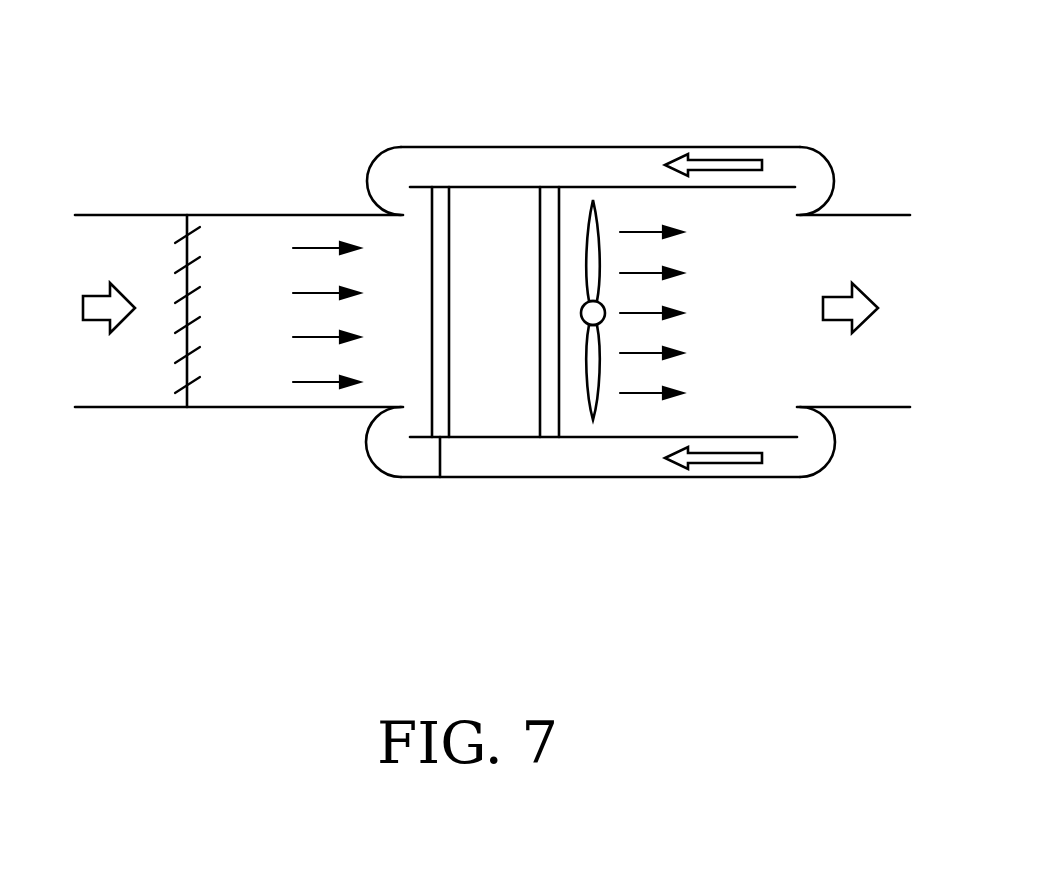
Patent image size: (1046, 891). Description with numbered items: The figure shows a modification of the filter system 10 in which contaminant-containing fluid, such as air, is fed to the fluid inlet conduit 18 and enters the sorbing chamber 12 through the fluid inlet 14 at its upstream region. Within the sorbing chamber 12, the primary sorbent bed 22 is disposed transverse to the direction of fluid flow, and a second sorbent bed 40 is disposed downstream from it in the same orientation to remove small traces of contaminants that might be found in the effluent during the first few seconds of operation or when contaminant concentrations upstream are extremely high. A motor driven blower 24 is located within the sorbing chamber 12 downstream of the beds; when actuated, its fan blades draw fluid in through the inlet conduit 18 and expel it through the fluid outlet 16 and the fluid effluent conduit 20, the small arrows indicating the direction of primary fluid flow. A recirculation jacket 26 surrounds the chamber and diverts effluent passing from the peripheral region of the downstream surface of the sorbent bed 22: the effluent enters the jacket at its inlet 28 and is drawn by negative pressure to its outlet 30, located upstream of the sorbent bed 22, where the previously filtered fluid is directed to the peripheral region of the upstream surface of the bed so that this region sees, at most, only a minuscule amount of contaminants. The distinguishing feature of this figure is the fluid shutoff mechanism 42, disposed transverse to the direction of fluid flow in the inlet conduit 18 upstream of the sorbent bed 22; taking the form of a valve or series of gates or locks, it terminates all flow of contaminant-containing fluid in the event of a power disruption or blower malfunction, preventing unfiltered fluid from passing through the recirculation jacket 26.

The filter system 10 is at (490, 112).
The sorbing chamber 12 is at (683, 248).
The fluid inlet 14 is at (415, 303).
The fluid outlet 16 is at (795, 287).
The fluid inlet conduit 18 is at (288, 407).
The fluid effluent conduit 20 is at (880, 407).
The sorbent bed 22 is at (440, 477).
The motor driven blower 24 is at (598, 420).
The recirculation jacket 26 is at (788, 450).
The recirculation jacket inlet 28 is at (800, 213).
The recirculation jacket outlet 30 is at (395, 147).
The second sorbent bed 40 is at (545, 437).
The fluid shutoff mechanism 42 is at (185, 407).